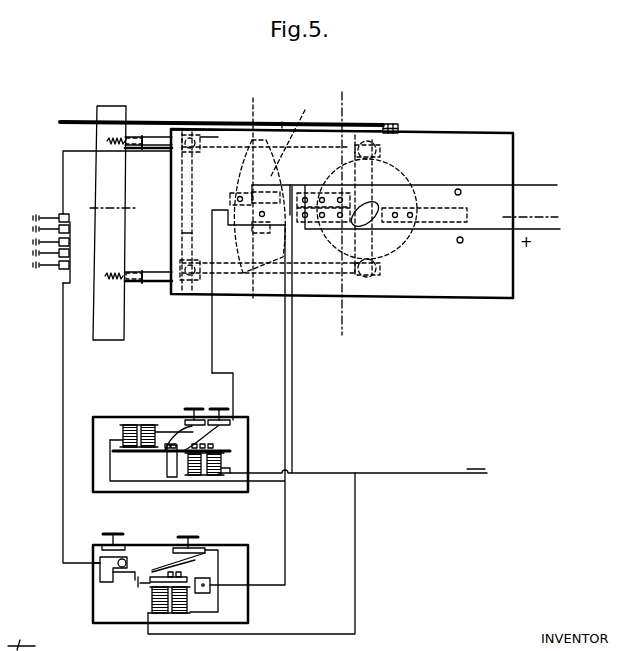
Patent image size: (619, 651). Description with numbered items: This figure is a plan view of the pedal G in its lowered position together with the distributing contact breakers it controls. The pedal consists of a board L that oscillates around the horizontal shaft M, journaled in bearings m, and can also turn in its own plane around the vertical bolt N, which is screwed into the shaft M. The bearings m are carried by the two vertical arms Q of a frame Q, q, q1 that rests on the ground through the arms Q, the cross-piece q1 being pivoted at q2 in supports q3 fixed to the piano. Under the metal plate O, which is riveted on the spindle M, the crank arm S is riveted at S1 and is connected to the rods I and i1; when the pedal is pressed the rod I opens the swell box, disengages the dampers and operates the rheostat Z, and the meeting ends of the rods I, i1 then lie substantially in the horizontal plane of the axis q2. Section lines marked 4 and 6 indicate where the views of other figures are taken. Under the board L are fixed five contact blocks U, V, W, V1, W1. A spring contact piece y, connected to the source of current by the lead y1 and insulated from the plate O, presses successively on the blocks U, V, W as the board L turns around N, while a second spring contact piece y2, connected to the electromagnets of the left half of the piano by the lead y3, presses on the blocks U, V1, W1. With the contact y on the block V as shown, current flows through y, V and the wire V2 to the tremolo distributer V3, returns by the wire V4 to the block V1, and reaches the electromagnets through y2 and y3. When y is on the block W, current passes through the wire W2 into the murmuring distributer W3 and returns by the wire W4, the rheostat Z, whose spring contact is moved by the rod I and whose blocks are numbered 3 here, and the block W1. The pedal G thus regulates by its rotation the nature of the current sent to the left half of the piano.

The connecting rod I is at (82, 122).
The pedal G is at (488, 153).
The board L is at (477, 131).
The contact block U is at (271, 229).
The contact block W1 is at (257, 191).
The connecting rod i1 is at (277, 116).
The contact block W is at (294, 136).
The section line 6 is at (349, 213).
The pivot q2 is at (190, 138).
The frame member q is at (218, 157).
The cross-piece q1 is at (182, 233).
The supports q3 is at (153, 147).
The rheostat Z is at (94, 217).
The contact 3 is at (69, 243).
The section line 4 is at (88, 209).
The contact block V1 is at (232, 182).
The contact block V is at (243, 279).
The spring contact piece y is at (406, 221).
The lead y1 is at (481, 231).
The second spring contact piece y2 is at (382, 191).
The lead y3 is at (493, 192).
The horizontal shaft M is at (365, 178).
The plate O is at (407, 177).
The vertical bolt N is at (375, 218).
The bearings m is at (380, 150).
The vertical arms Q is at (358, 273).
The crank arm S is at (350, 145).
The rivet S1 is at (355, 185).
The wire V4 is at (212, 350).
The wire W2 is at (277, 367).
The wire V2 is at (263, 497).
The wire W4 is at (62, 442).
The tremolo distributer V3 is at (242, 440).
The murmuring distributer W3 is at (242, 563).